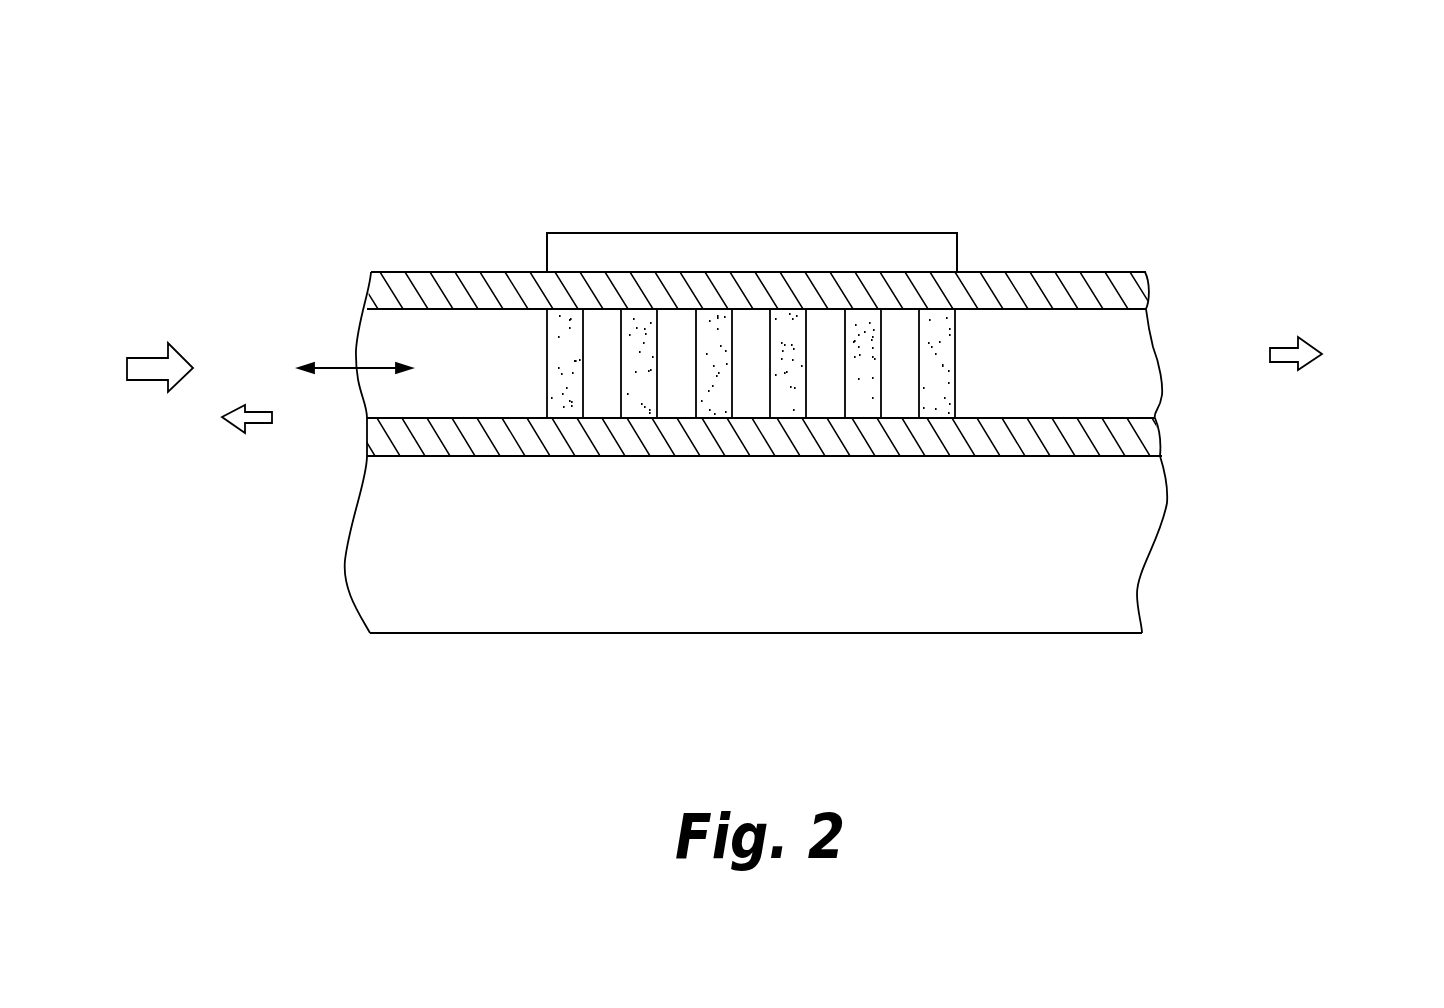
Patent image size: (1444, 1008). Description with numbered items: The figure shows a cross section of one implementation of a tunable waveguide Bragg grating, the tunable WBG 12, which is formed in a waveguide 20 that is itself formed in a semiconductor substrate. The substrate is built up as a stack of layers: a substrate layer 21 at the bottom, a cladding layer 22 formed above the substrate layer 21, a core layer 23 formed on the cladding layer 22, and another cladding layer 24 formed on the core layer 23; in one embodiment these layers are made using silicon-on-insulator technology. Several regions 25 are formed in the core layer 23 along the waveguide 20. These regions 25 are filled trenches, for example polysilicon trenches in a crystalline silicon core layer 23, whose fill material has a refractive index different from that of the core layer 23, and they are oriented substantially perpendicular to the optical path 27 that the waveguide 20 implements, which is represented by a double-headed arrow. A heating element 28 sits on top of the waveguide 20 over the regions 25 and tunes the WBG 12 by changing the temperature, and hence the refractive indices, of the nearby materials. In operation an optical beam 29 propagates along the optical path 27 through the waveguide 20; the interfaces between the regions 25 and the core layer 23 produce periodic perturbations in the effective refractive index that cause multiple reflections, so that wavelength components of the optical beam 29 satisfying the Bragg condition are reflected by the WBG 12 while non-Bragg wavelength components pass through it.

The tunable WBG 12 is at (1052, 140).
The waveguide 20 is at (1373, 273).
The substrate layer 21 is at (1153, 550).
The cladding layer 22 is at (1160, 442).
The core layer 23 is at (1158, 347).
The cladding layer 24 is at (1147, 290).
The regions 25 is at (883, 397).
The optical path 27 is at (330, 367).
The heating element 28 is at (912, 232).
The optical beam 29 is at (143, 382).